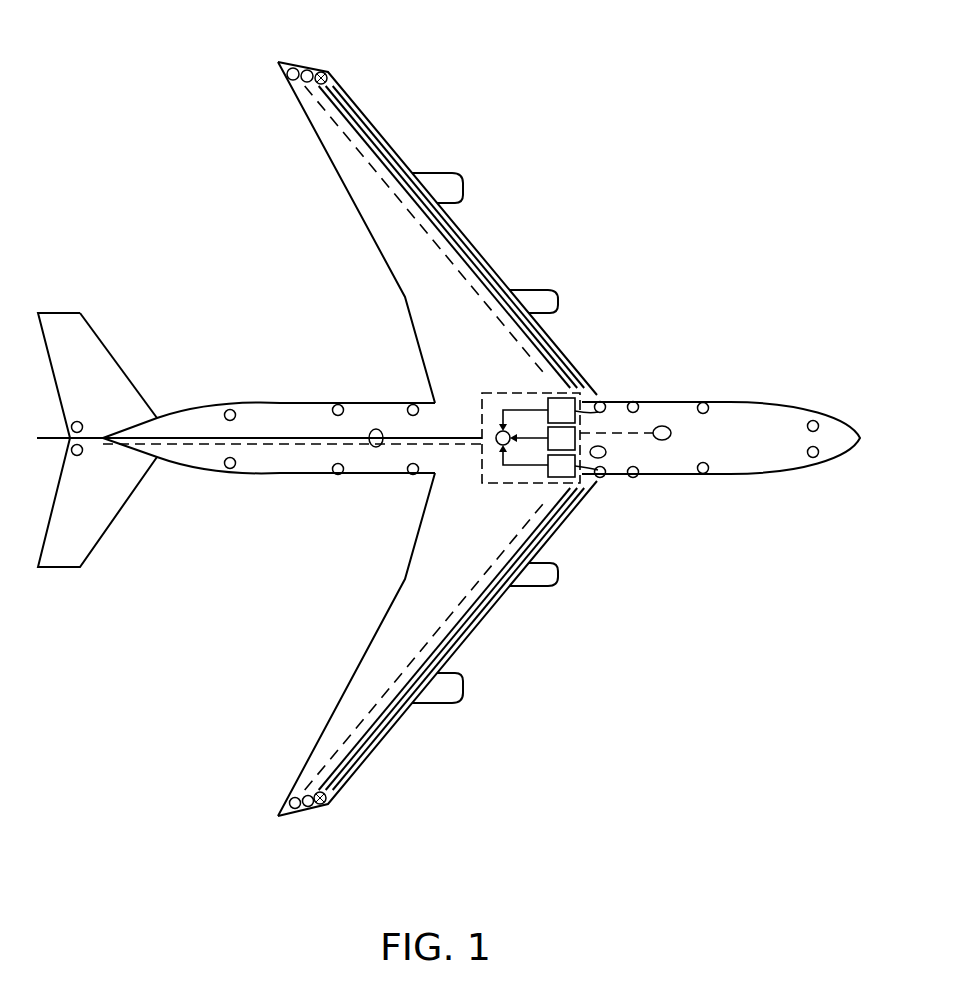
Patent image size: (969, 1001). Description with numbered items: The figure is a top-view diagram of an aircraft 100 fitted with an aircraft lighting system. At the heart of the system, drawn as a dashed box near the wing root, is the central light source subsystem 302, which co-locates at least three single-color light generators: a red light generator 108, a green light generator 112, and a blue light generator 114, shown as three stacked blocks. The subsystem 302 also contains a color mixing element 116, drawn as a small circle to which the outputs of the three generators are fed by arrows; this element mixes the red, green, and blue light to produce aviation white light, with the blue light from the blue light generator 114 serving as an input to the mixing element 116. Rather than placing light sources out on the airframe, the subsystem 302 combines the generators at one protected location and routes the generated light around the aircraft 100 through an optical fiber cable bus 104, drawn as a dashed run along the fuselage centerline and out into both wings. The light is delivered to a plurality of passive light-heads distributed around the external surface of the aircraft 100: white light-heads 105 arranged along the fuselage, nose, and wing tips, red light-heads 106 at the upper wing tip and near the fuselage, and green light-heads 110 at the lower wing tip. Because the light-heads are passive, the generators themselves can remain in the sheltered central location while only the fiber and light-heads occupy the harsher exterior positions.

The aircraft 100 is at (118, 367).
The optical fiber cable bus 104 is at (376, 429).
The white light-heads 105 is at (230, 409).
The red light-heads 106 is at (320, 71).
The red light generator 108 is at (597, 402).
The green light-heads 110 is at (326, 798).
The green light generator 112 is at (548, 432).
The blue light generator 114 is at (600, 478).
The color mixing element 116 is at (496, 438).
The central light source subsystem 302 is at (483, 393).